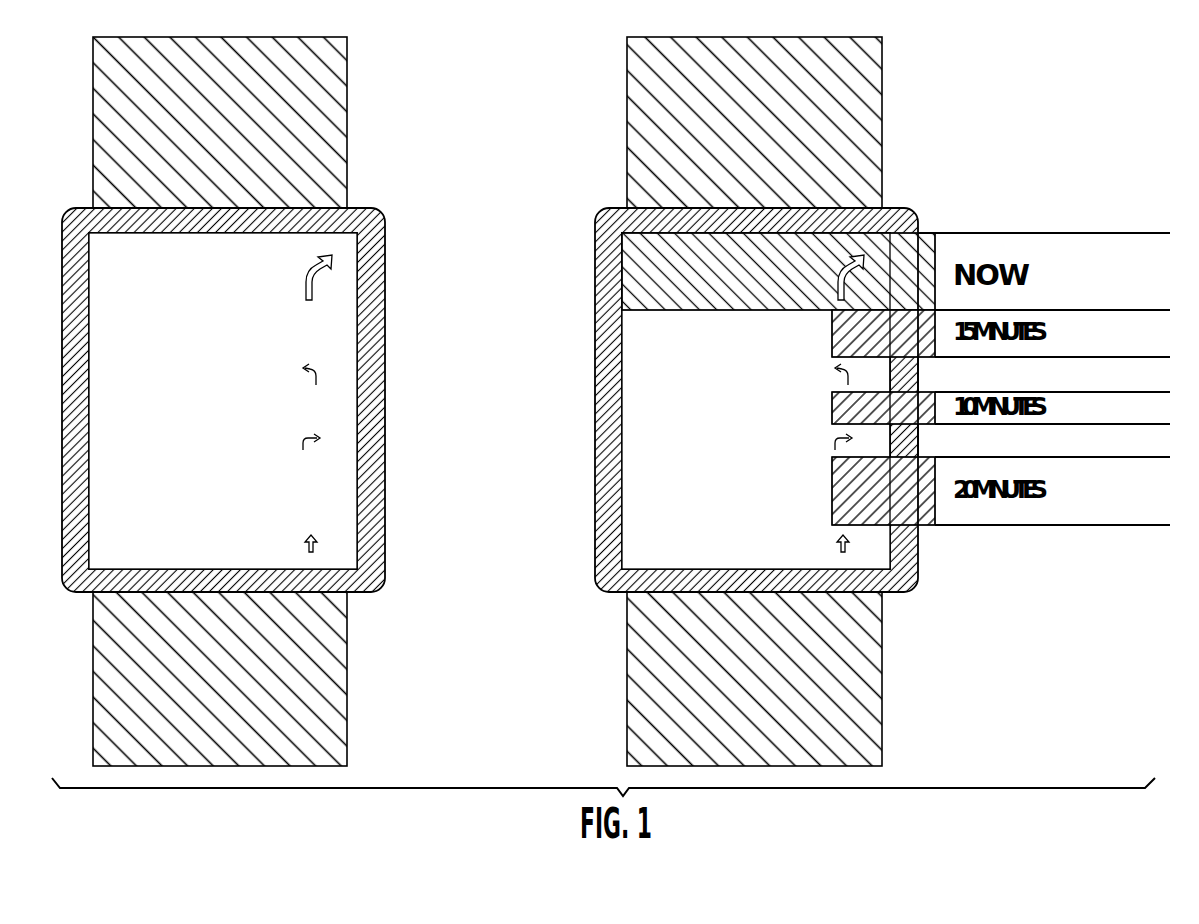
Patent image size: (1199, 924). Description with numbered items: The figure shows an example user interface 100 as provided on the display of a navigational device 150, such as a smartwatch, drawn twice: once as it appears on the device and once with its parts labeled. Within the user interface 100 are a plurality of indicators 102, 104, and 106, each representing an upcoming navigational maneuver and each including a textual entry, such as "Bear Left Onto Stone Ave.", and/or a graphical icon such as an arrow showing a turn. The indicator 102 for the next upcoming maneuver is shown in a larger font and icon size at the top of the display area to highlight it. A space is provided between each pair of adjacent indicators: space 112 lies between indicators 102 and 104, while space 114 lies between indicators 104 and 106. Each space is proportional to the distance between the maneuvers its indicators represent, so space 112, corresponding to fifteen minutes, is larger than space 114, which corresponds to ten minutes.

The user interface 100 is at (322, 334).
The indicator 102 is at (624, 264).
The indicator 104 is at (628, 355).
The indicator 106 is at (625, 422).
The space 112 is at (875, 332).
The space 114 is at (875, 408).
The navigational device 150 is at (371, 219).